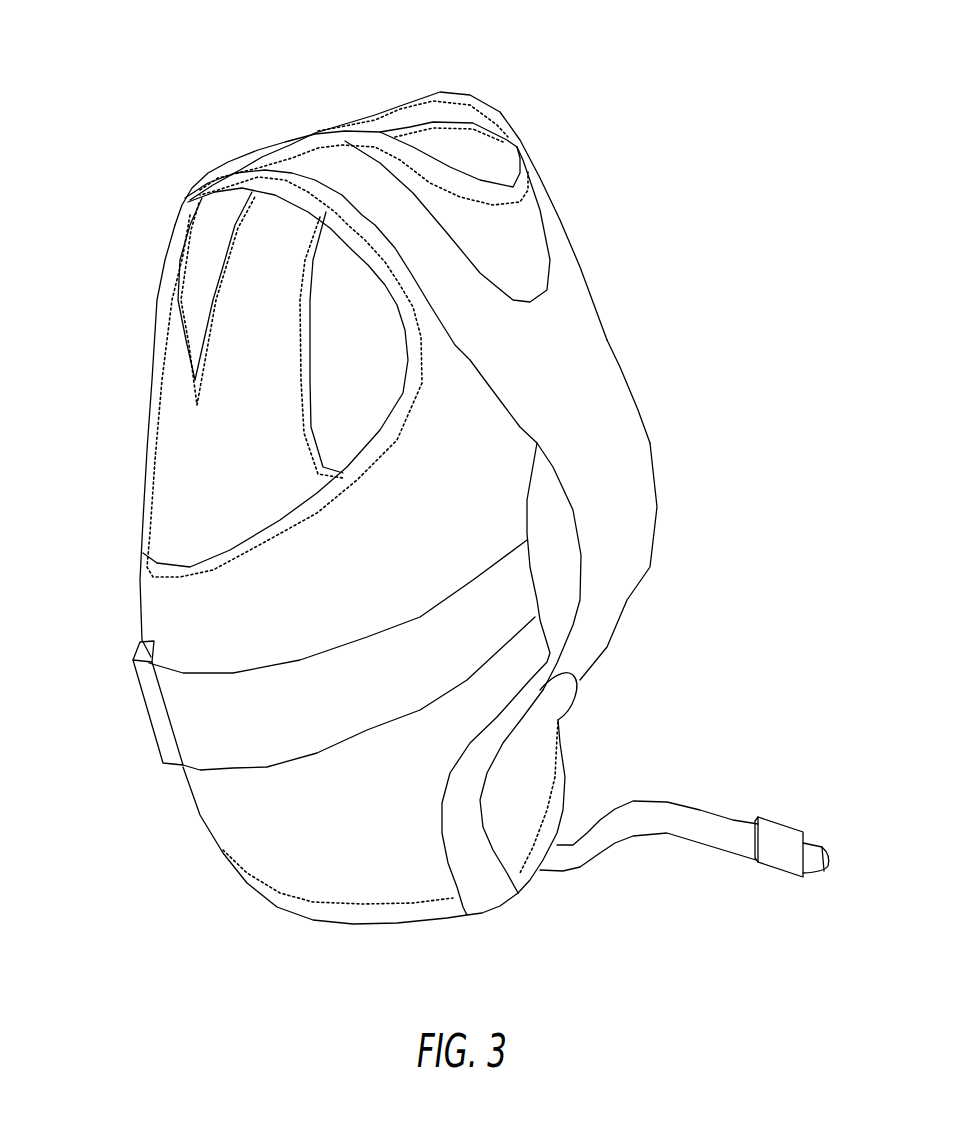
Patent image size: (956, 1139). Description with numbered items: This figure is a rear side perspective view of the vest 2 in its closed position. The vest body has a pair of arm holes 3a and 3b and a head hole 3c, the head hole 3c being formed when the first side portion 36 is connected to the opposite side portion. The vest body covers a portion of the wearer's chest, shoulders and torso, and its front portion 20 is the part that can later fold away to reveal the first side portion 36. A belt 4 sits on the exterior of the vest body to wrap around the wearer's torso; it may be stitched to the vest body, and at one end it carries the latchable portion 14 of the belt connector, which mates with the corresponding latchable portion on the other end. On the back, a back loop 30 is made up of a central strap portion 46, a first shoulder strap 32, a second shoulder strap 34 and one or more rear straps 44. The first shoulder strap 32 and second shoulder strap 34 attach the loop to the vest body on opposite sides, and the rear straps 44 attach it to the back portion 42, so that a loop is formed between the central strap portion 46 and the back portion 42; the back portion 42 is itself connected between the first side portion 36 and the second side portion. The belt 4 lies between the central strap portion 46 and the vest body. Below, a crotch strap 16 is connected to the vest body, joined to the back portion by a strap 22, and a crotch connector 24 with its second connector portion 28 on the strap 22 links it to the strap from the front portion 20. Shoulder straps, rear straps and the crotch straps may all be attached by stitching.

The vest 2 is at (613, 214).
The arm hole 3a is at (327, 345).
The arm hole 3b is at (450, 157).
The head hole 3c is at (507, 160).
The belt 4 is at (212, 743).
The latchable portion 14 is at (133, 690).
The crotch strap 16 is at (708, 835).
The front portion 20 is at (172, 344).
The strap 22 is at (655, 812).
The crotch connector 24 is at (773, 830).
The second connector portion 28 is at (787, 835).
The back loop 30 is at (578, 343).
The first shoulder strap 32 is at (482, 105).
The second shoulder strap 34 is at (263, 157).
The first side portion 36 is at (273, 511).
The back portion 42 is at (357, 838).
The rear straps 44 is at (563, 687).
The central strap portion 46 is at (612, 443).